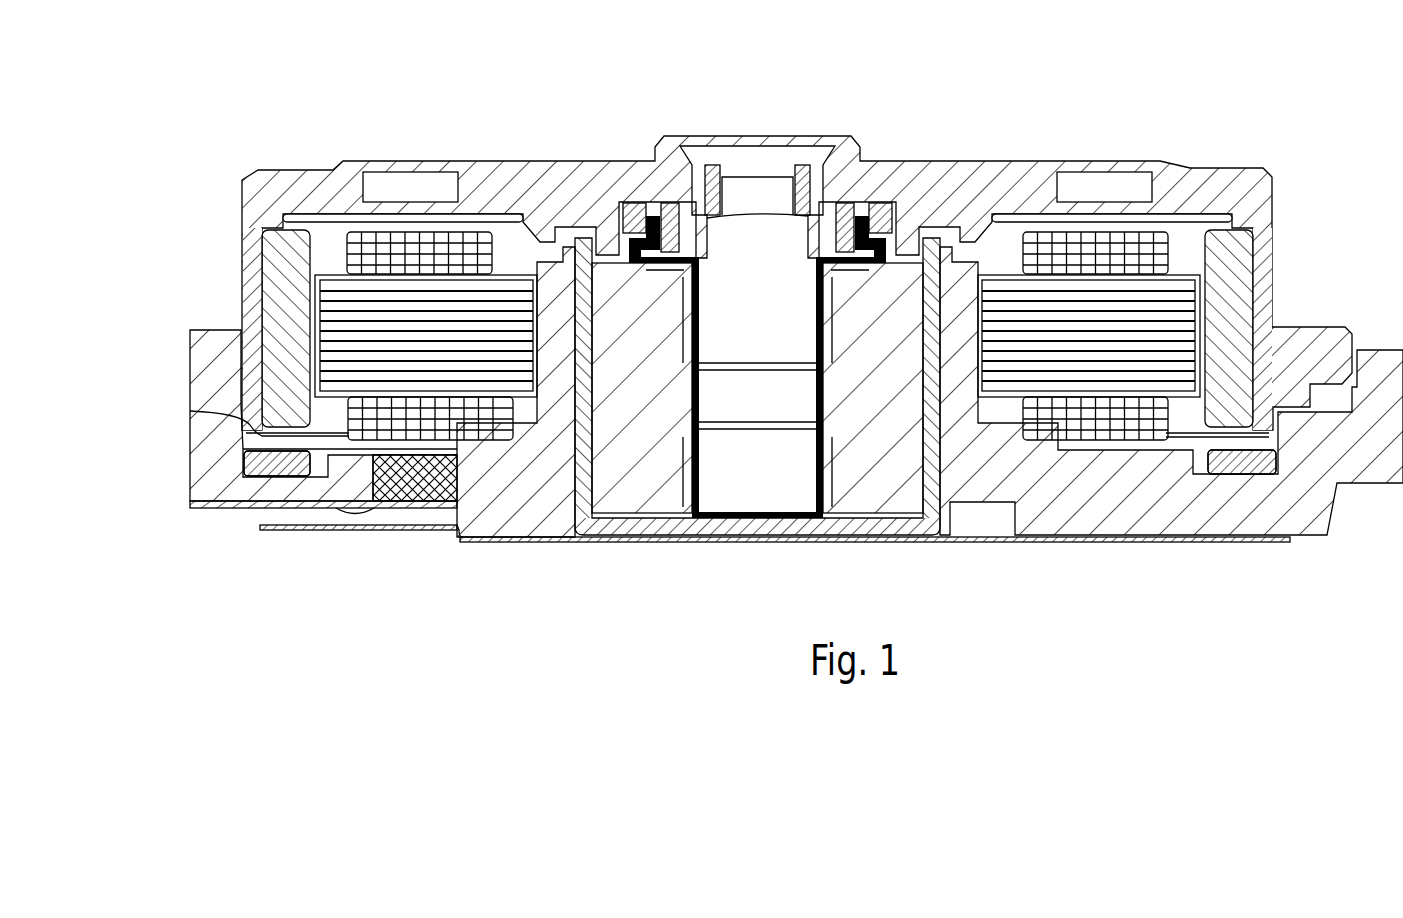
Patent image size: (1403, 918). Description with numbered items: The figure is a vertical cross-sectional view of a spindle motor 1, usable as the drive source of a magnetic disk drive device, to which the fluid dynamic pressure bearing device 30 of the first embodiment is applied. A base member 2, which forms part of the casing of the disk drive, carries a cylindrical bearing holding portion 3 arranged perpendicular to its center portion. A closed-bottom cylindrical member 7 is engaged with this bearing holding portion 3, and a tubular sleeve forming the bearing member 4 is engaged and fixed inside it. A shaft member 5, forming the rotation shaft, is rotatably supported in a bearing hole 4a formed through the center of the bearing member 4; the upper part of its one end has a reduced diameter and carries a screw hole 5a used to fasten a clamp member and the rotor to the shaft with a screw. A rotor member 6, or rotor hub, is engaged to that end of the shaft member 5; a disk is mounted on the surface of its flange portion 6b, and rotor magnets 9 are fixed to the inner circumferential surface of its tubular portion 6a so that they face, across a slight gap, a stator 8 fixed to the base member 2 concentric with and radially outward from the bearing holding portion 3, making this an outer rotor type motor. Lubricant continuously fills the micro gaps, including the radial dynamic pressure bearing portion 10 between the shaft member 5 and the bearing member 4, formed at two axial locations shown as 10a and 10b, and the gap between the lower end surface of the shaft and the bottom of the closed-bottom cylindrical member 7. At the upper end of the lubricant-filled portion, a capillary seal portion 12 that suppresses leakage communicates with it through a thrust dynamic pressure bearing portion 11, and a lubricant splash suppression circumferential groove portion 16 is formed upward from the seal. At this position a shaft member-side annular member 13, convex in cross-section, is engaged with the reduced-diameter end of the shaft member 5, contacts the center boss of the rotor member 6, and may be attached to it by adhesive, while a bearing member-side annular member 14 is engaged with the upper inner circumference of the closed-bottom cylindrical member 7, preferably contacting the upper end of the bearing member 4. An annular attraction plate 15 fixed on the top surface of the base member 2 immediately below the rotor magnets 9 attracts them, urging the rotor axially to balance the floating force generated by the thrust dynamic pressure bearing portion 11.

The spindle motor 1 is at (1068, 82).
The base member 2 is at (796, 427).
The cylindrical bearing holding portion 3 is at (975, 483).
The bearing member 4 is at (807, 416).
The bearing hole 4a is at (812, 470).
The shaft member 5 is at (757, 350).
The screw hole 5a is at (742, 208).
The rotor member 6 is at (800, 255).
The tubular portion 6a is at (1274, 196).
The flange portion 6b is at (1318, 328).
The closed-bottom cylindrical member 7 is at (687, 523).
The stator 8 is at (1077, 373).
The rotor magnets 9 is at (1232, 408).
The radial dynamic pressure bearing portion 10 is at (740, 435).
The radial dynamic pressure bearing portion (first location) 10a is at (590, 538).
The radial dynamic pressure bearing portion (second location) 10b is at (757, 414).
The thrust dynamic pressure bearing portion 11 is at (638, 292).
The capillary seal portion 12 is at (653, 225).
The shaft member-side annular member 13 is at (860, 225).
The bearing member-side annular member 14 is at (905, 218).
The attraction plate 15 is at (262, 465).
The lubricant splash suppression circumferential groove portion 16 is at (892, 228).
The fluid dynamic pressure bearing device 30 is at (912, 229).